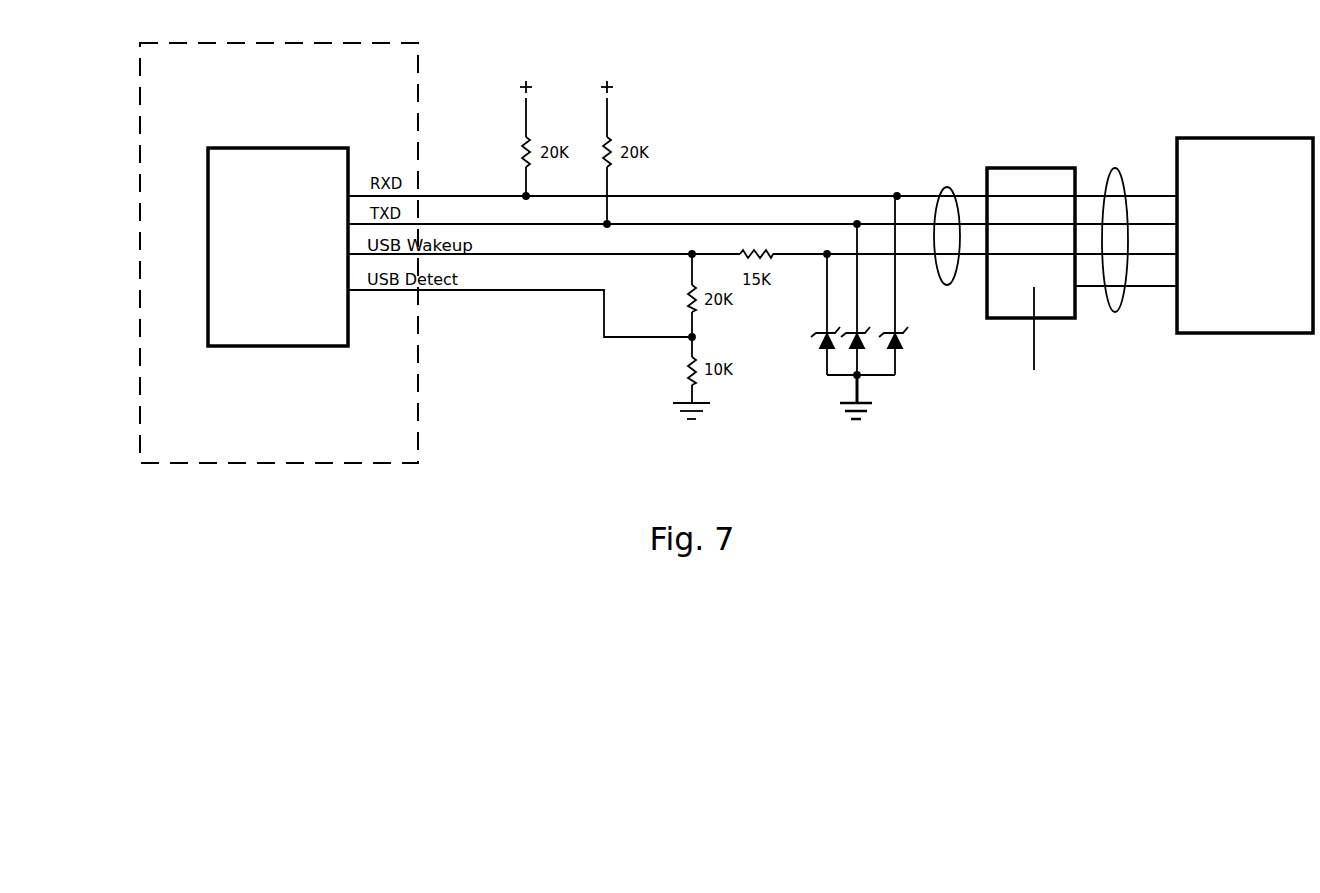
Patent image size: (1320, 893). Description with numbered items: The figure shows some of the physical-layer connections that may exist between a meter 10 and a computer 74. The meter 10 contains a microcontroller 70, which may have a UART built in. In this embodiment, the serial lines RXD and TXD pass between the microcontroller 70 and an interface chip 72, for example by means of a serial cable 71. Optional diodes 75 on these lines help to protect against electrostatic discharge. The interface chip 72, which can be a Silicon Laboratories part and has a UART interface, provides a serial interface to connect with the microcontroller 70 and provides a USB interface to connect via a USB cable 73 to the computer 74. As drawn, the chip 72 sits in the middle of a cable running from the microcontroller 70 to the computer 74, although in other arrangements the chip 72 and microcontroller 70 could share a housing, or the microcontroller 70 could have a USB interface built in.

The meter 10 is at (245, 465).
The microcontroller 70 is at (258, 346).
The serial cable 71 is at (947, 187).
The interface chip 72 is at (1023, 168).
The USB cable 73 is at (1115, 167).
The computer 74 is at (1217, 138).
The diodes 75 is at (905, 357).